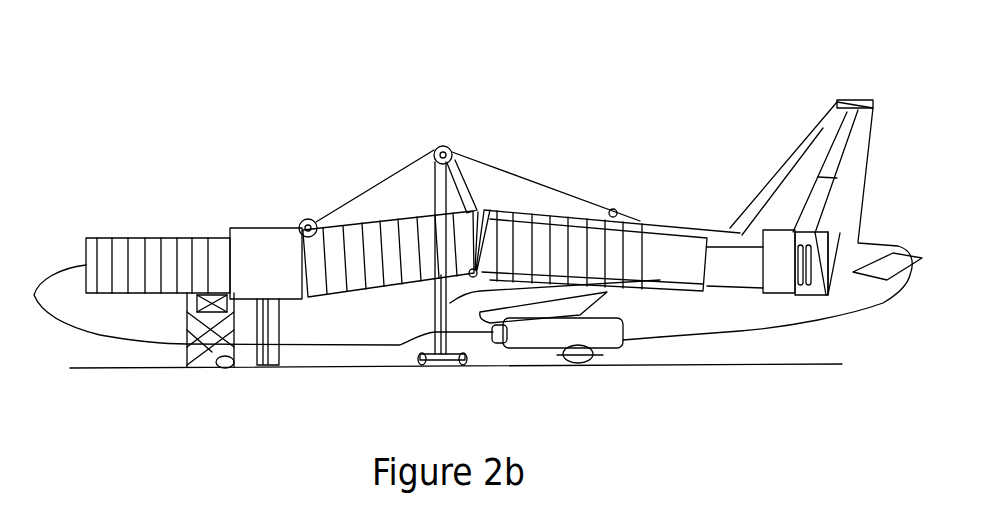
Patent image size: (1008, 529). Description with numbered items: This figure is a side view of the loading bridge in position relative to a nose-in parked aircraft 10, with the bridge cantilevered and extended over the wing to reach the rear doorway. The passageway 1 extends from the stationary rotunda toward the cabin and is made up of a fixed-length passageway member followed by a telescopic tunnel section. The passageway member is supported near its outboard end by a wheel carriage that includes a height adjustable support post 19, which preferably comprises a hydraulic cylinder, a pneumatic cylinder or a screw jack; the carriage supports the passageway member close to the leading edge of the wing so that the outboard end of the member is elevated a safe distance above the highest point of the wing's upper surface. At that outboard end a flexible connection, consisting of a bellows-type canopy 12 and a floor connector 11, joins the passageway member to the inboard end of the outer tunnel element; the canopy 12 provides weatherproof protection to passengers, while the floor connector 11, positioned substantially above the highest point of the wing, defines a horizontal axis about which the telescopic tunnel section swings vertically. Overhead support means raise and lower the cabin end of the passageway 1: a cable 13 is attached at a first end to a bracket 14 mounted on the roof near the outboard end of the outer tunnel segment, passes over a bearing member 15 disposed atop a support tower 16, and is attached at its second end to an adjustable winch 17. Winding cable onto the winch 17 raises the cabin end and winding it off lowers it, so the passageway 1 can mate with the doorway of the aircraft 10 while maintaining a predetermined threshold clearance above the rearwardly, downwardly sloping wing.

The passageway 1 is at (575, 50).
The aircraft 10 is at (848, 347).
The floor connector 11 is at (474, 278).
The bellows-type canopy 12 is at (555, 213).
The cable 13 is at (616, 208).
The bracket 14 is at (624, 214).
The bearing member 15 is at (439, 147).
The support tower 16 is at (462, 174).
The adjustable winch 17 is at (303, 222).
The height adjustable support post 19 is at (432, 330).